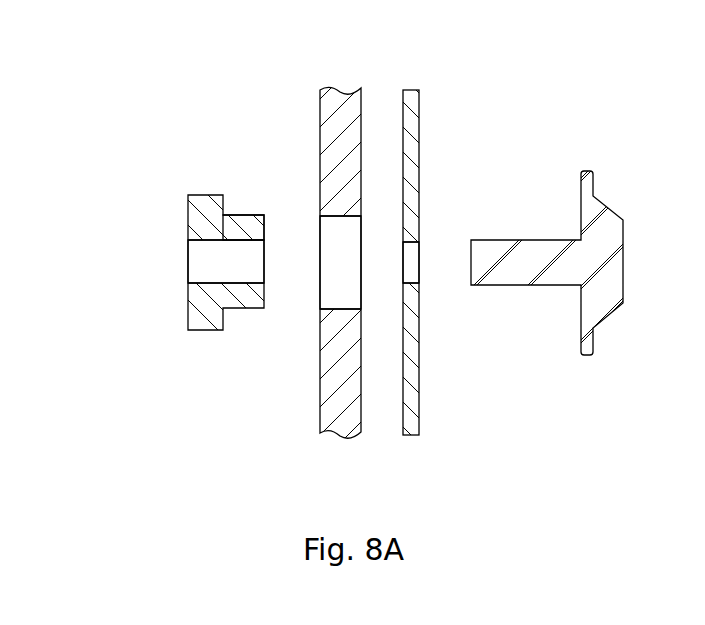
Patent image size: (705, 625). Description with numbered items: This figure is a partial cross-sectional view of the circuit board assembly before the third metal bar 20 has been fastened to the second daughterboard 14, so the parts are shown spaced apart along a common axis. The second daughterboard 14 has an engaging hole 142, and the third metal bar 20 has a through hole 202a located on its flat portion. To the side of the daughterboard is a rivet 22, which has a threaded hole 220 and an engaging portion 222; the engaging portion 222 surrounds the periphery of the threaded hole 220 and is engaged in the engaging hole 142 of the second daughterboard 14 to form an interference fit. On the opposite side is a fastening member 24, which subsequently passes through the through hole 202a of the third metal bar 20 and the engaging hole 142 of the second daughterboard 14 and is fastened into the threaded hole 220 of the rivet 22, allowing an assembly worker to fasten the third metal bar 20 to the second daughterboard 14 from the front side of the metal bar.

The second daughterboard 14 is at (340, 92).
The engaging hole 142 is at (333, 287).
The third metal bar 20 is at (417, 92).
The through hole 202a is at (413, 271).
The rivet 22 is at (198, 195).
The threaded hole 220 is at (194, 260).
The engaging portion 222 is at (243, 219).
The fastening member 24 is at (625, 241).